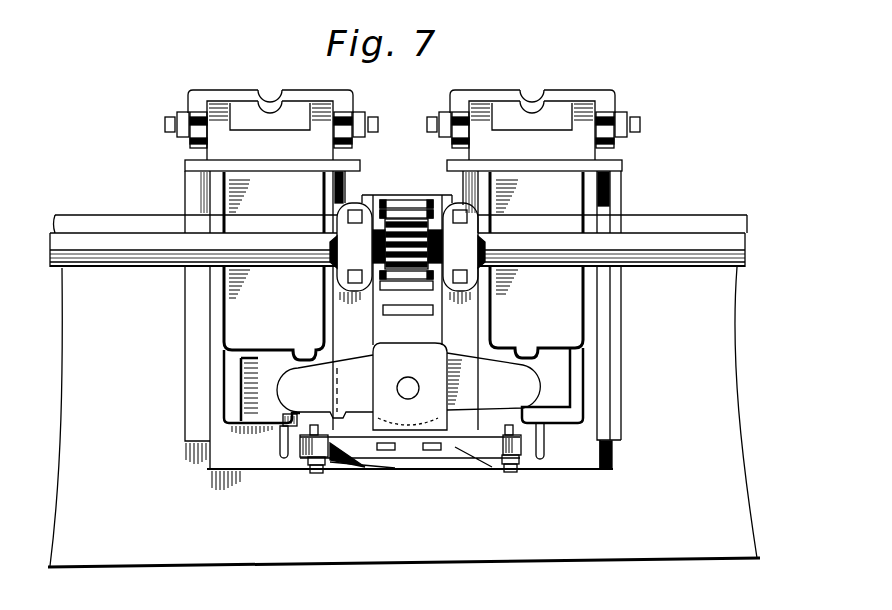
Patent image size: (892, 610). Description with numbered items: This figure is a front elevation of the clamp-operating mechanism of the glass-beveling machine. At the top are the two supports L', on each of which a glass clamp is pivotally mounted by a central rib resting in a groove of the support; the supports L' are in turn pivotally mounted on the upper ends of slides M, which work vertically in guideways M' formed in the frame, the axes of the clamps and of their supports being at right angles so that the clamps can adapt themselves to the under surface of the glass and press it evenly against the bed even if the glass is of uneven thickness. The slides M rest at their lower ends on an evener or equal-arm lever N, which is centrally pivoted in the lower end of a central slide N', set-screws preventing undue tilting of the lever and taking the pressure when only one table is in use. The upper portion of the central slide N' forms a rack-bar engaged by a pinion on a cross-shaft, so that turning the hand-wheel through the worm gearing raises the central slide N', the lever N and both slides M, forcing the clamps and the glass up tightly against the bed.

The support L' is at (403, 116).
The slide M is at (404, 372).
The guideway M' is at (685, 412).
The evener or equal-arm lever N is at (408, 405).
The central slide N' is at (403, 330).